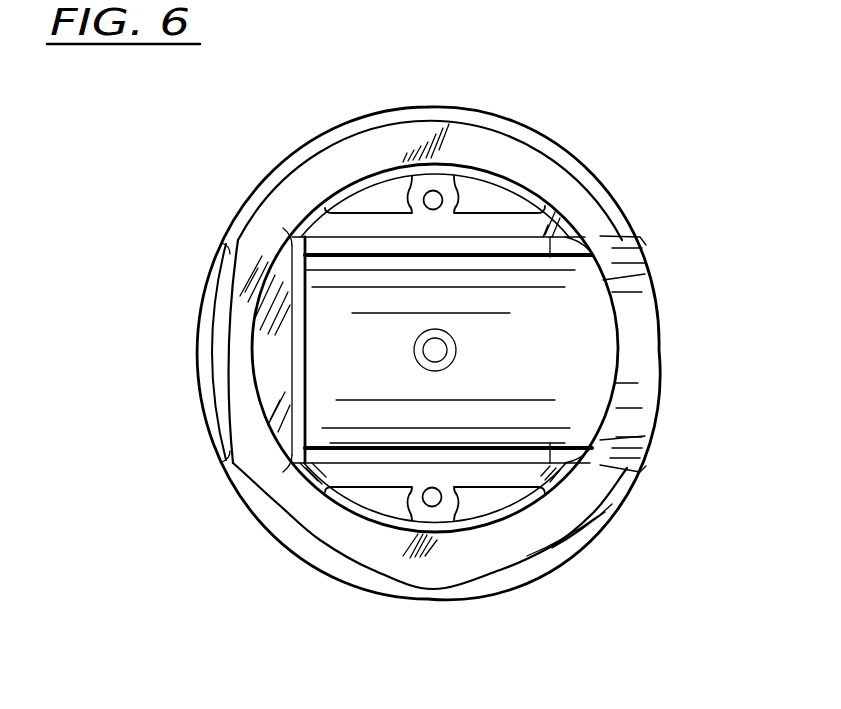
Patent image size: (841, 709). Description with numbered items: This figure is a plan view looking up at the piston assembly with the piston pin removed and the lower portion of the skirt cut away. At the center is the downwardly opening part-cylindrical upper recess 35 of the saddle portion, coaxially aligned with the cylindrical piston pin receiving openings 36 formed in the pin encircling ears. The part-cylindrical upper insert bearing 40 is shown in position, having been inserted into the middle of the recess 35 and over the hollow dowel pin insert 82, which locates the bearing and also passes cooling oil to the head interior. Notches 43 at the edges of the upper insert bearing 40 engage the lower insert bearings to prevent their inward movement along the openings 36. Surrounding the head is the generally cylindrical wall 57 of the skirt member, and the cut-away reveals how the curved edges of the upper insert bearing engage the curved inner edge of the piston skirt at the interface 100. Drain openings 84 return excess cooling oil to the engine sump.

The upper recess 35 is at (378, 232).
The piston pin receiving openings 36 is at (645, 393).
The upper insert bearing 40 is at (493, 242).
The notch 43 is at (590, 278).
The cylindrical wall 57 is at (535, 165).
The dowel pin insert 82 is at (452, 350).
The drain openings 84 is at (434, 194).
The interface 100 is at (617, 360).